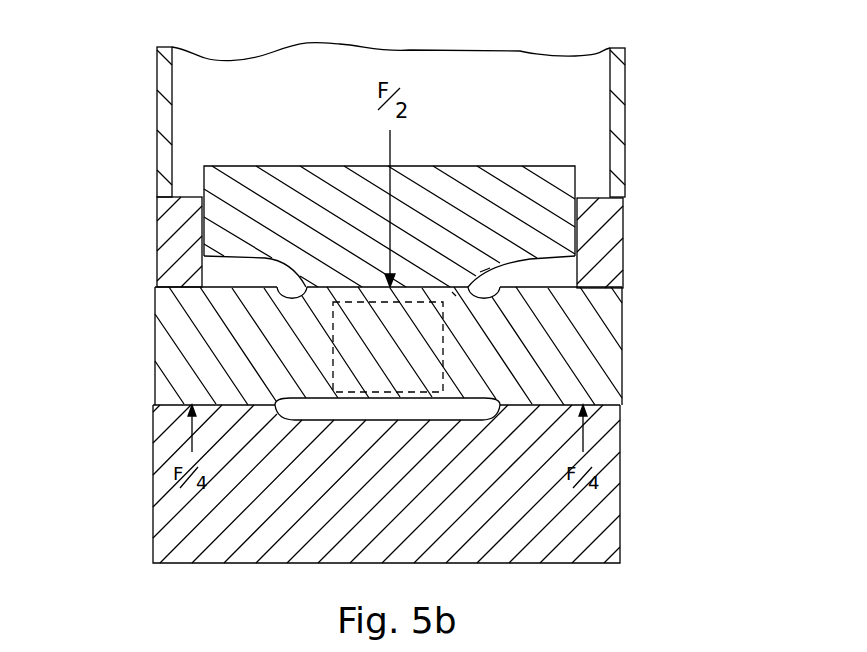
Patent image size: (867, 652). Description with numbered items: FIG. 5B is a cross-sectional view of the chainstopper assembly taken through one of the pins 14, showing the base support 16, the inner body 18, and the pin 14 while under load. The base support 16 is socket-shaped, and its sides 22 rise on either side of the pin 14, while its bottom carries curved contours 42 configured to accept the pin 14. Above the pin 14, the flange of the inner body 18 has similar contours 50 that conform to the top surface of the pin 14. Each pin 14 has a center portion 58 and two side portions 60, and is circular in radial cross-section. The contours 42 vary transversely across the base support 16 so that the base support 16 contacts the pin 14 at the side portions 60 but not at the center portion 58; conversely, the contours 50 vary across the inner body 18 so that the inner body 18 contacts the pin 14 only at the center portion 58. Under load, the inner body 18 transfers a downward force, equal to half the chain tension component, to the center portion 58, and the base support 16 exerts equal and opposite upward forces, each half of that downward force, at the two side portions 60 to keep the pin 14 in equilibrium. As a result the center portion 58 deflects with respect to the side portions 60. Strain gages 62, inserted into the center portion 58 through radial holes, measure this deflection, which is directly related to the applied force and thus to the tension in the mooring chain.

The pin 14 is at (556, 280).
The base support 16 is at (623, 273).
The inner body 18 is at (223, 166).
The sides 22 is at (593, 198).
The curved contours 42 is at (160, 407).
The contours 50 is at (450, 292).
The center portion 58 is at (320, 292).
The side portions 60 is at (195, 330).
The strain gages 62 is at (333, 340).